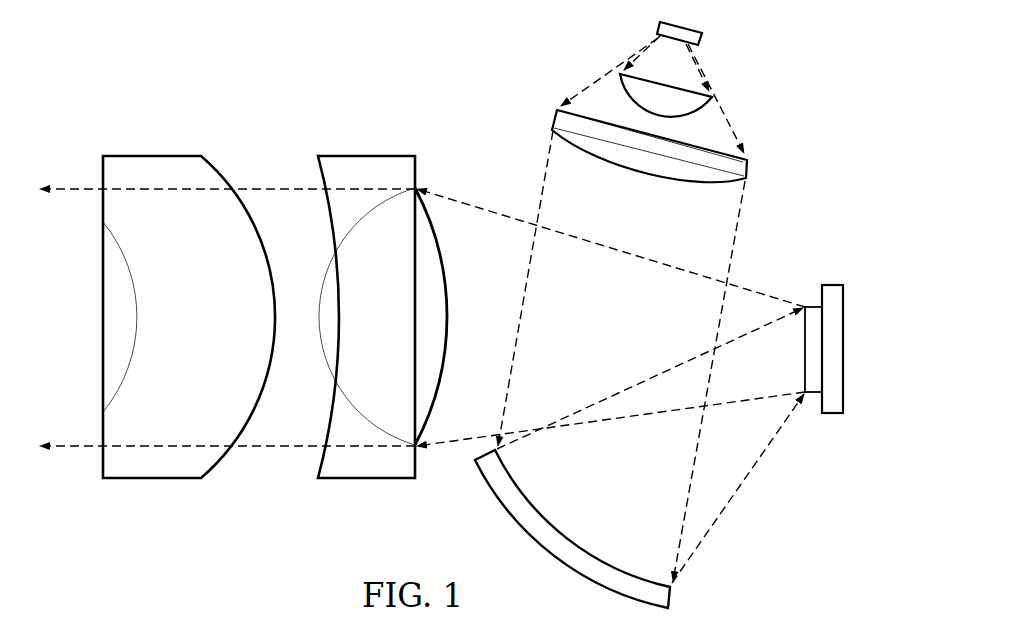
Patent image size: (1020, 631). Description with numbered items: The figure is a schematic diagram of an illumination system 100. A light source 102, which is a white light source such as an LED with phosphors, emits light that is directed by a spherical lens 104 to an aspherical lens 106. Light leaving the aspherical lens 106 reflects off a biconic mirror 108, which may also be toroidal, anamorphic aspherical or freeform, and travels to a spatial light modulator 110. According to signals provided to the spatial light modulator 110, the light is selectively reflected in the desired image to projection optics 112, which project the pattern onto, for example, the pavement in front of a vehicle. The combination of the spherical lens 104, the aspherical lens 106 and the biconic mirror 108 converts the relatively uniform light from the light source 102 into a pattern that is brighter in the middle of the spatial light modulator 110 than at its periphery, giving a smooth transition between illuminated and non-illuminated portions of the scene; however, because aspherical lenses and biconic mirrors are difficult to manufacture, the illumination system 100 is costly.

The illumination system 100 is at (290, 68).
The light source 102 is at (703, 40).
The spherical lens 104 is at (700, 114).
The aspherical lens 106 is at (745, 166).
The biconic mirror 108 is at (568, 541).
The spatial light modulator 110 is at (845, 350).
The projection optics 112 is at (415, 487).